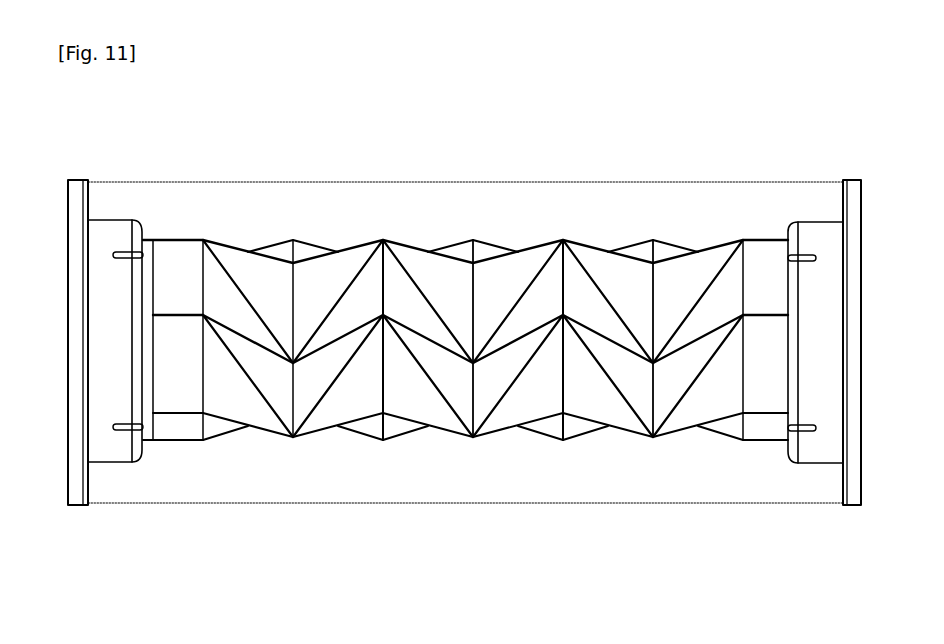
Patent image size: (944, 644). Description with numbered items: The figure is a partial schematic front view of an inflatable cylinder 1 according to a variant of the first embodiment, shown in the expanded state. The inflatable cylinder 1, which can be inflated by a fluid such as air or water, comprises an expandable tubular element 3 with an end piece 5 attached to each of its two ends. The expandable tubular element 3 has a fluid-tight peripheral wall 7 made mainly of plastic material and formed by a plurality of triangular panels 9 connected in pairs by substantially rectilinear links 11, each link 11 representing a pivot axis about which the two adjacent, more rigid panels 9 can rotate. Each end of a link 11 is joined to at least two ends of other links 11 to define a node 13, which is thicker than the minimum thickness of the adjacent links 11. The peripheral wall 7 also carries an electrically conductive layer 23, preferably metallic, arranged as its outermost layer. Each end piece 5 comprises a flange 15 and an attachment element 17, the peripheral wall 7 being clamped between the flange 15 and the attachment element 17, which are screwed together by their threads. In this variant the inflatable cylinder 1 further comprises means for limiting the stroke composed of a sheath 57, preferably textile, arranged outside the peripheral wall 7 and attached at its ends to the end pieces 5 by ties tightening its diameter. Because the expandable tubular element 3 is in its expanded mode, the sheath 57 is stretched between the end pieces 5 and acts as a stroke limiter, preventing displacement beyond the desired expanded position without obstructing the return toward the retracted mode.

The inflatable cylinder 1 is at (400, 138).
The expandable tubular element 3 is at (349, 242).
The end piece 5 is at (92, 202).
The peripheral wall 7 is at (268, 248).
The panels 9 is at (605, 322).
The links 11 is at (624, 320).
The node 13 is at (640, 328).
The flange 15 is at (85, 483).
The attachment element 17 is at (118, 457).
The electrically conductive layer 23 is at (362, 404).
The sheath 57 is at (540, 182).